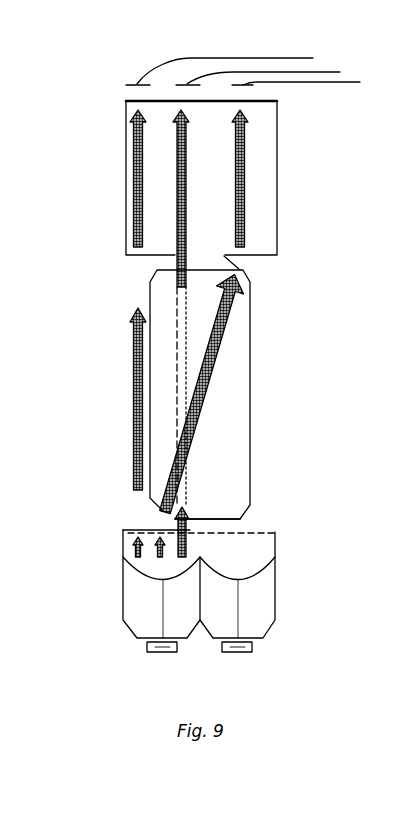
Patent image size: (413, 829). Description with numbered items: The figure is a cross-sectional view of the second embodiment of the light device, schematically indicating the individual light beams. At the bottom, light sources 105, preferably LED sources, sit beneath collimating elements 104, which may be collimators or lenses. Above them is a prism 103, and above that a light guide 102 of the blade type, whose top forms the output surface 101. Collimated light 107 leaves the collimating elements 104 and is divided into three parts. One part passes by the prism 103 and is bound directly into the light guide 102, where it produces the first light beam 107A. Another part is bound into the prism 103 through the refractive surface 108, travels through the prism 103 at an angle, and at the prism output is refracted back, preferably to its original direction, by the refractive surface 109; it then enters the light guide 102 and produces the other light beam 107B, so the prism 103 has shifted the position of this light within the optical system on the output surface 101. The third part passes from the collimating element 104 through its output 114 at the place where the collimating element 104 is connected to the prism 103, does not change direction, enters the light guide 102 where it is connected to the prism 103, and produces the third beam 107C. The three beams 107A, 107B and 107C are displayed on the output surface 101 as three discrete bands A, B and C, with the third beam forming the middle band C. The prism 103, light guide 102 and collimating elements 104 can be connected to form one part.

The band A is at (228, 65).
The band B is at (306, 84).
The middle band C is at (269, 70).
The output surface 101 is at (257, 101).
The light guide 102 is at (270, 150).
The prism 103 is at (237, 362).
The collimating element 104 is at (183, 605).
The light source 105 is at (172, 651).
The collimated light 107 is at (128, 537).
The first light beam 107A is at (138, 343).
The other light beam 107B is at (303, 428).
The third beam 107C is at (177, 233).
The refractive surface 108 is at (230, 522).
The refractive surface 109 is at (224, 256).
The output 114 is at (260, 535).